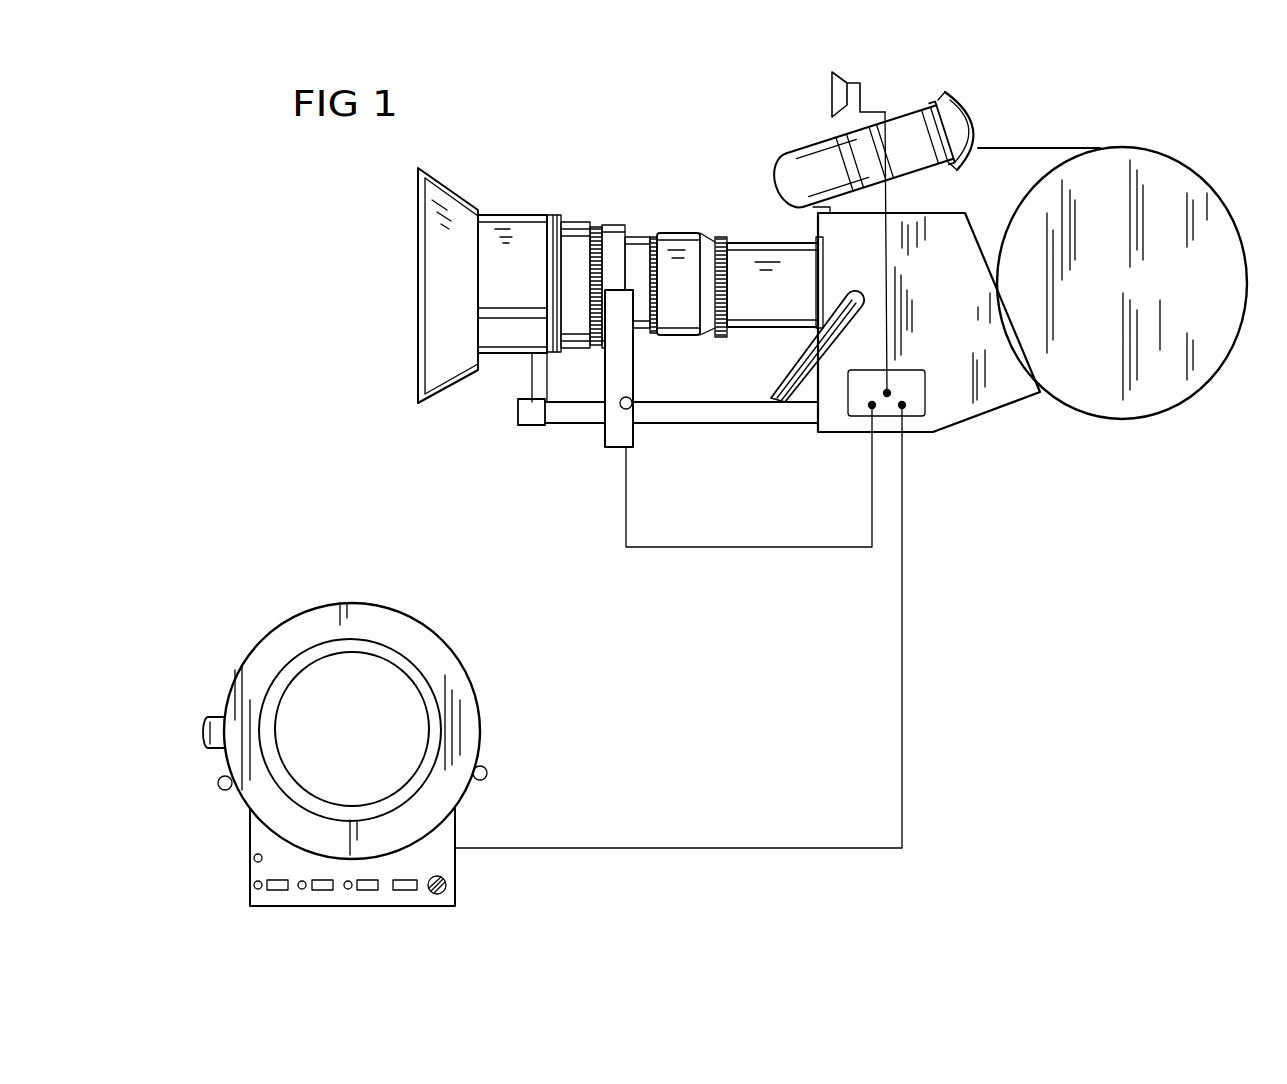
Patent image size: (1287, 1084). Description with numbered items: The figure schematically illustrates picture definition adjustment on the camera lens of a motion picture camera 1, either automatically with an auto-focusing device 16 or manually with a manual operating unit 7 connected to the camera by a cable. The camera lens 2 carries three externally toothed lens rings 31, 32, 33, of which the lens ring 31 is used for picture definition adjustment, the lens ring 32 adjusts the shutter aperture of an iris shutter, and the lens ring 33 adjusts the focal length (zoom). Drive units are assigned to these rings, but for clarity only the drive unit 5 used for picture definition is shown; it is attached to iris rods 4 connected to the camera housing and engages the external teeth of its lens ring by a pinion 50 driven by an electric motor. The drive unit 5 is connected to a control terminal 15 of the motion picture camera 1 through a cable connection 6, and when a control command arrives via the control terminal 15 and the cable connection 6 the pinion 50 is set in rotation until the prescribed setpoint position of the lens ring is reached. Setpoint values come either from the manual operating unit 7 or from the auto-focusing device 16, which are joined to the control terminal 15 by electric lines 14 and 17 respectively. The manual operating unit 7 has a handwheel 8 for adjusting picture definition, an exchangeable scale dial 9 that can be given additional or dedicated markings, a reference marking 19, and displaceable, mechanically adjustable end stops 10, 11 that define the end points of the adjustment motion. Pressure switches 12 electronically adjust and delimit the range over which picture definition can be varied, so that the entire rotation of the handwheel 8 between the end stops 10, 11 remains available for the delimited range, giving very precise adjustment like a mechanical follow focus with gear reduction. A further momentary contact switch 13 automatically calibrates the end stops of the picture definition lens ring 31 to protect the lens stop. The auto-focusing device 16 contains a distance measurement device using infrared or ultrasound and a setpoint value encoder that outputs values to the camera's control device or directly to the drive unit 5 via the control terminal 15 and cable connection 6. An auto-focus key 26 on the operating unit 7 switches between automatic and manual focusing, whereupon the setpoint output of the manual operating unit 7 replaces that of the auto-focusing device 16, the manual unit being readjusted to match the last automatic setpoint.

The motion picture camera 1 is at (1020, 165).
The camera lens 2 is at (517, 257).
The lens ring 31 is at (595, 227).
The pinion 50 is at (590, 275).
The lens ring 32 is at (652, 235).
The lens ring 33 is at (722, 238).
The iris rods 4 is at (720, 413).
The drive unit 5 is at (620, 366).
The cable connection 6 is at (753, 548).
The manual operating unit 7 is at (490, 694).
The handwheel 8 is at (375, 678).
The scale dial 9 is at (288, 635).
The end stop 10 is at (223, 792).
The end stop 11 is at (488, 773).
The pressure switches 12 is at (367, 892).
The momentary contact switch 13 is at (272, 893).
The electric line 14 is at (905, 700).
The control terminal 15 is at (912, 408).
The auto-focusing device 16 is at (832, 78).
The electric line 17 is at (887, 293).
The reference marking 19 is at (203, 742).
The auto-focus key 26 is at (410, 888).